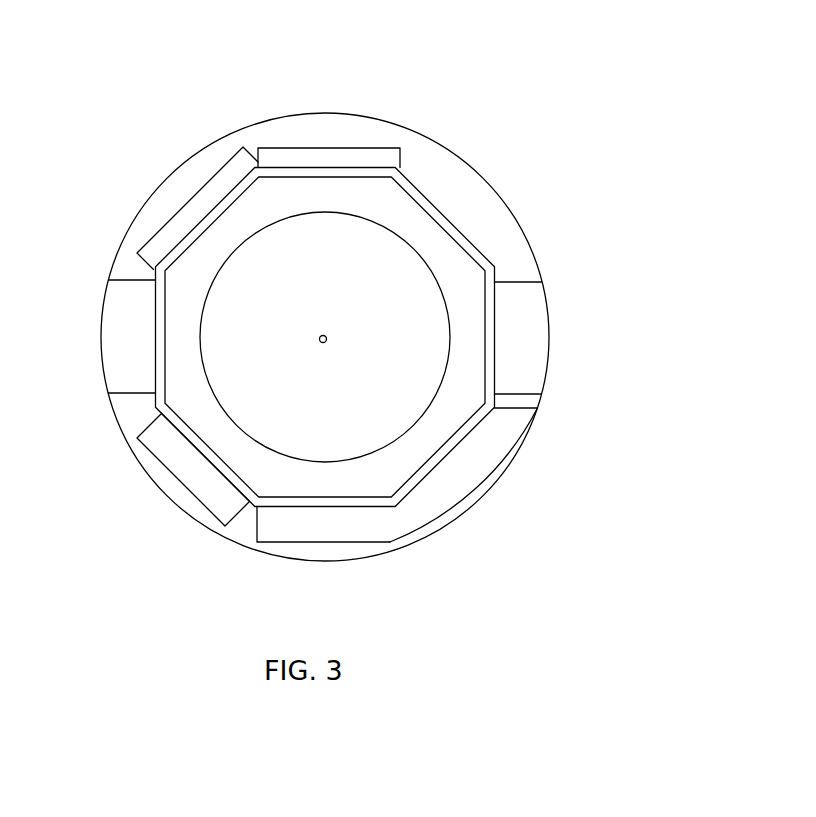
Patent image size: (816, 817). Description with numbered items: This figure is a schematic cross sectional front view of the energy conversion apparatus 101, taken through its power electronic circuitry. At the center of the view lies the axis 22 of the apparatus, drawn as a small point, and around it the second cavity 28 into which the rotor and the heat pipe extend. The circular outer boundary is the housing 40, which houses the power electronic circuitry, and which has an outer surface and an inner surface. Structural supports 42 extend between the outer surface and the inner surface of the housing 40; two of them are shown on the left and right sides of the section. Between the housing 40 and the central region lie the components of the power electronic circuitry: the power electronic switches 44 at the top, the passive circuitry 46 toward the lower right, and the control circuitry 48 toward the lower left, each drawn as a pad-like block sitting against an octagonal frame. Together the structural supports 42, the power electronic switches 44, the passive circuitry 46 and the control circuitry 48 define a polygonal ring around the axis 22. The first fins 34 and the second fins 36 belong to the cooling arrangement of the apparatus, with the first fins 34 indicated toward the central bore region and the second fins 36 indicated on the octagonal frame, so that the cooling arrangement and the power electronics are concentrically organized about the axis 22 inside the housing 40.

The energy conversion apparatus 101 is at (607, 76).
The axis 22 is at (320, 337).
The second cavity 28 is at (210, 246).
The first fins 34 is at (398, 313).
The second fins 36 is at (358, 173).
The housing 40 is at (468, 162).
The structural supports 42 is at (98, 346).
The power electronic switches 44 is at (326, 137).
The passive circuitry 46 is at (498, 474).
The control circuitry 48 is at (175, 483).